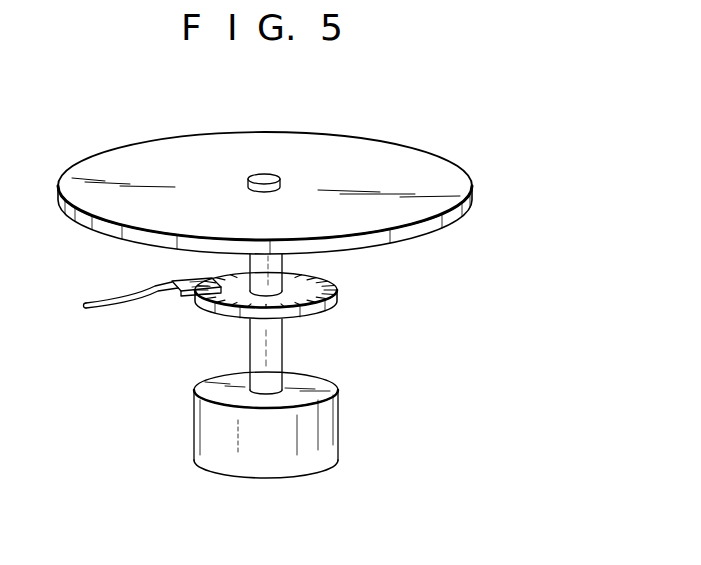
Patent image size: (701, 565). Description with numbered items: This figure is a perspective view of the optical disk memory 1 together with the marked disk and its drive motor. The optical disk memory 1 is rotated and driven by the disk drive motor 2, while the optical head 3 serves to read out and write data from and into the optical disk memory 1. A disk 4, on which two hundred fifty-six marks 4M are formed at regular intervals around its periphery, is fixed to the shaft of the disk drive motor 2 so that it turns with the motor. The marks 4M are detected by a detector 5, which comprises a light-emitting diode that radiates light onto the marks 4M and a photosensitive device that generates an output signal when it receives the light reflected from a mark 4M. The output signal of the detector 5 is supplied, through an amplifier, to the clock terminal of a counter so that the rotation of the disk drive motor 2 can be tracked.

The optical disk memory 1 is at (402, 157).
The disk drive motor 2 is at (327, 432).
The optical head 3 is at (276, 350).
The disk 4 is at (300, 281).
The marks 4M is at (333, 288).
The detector 5 is at (193, 279).